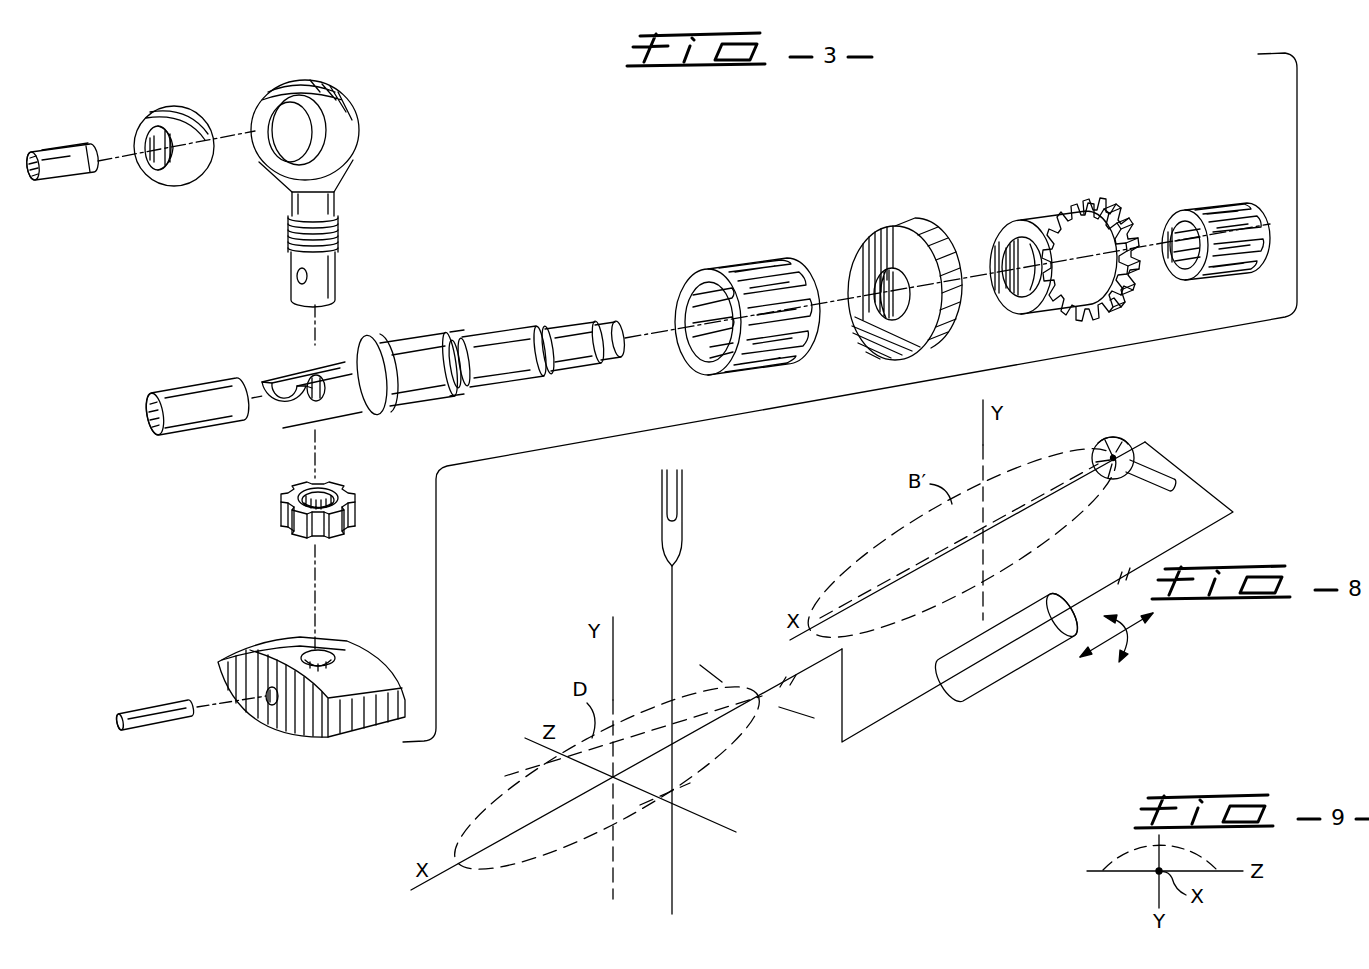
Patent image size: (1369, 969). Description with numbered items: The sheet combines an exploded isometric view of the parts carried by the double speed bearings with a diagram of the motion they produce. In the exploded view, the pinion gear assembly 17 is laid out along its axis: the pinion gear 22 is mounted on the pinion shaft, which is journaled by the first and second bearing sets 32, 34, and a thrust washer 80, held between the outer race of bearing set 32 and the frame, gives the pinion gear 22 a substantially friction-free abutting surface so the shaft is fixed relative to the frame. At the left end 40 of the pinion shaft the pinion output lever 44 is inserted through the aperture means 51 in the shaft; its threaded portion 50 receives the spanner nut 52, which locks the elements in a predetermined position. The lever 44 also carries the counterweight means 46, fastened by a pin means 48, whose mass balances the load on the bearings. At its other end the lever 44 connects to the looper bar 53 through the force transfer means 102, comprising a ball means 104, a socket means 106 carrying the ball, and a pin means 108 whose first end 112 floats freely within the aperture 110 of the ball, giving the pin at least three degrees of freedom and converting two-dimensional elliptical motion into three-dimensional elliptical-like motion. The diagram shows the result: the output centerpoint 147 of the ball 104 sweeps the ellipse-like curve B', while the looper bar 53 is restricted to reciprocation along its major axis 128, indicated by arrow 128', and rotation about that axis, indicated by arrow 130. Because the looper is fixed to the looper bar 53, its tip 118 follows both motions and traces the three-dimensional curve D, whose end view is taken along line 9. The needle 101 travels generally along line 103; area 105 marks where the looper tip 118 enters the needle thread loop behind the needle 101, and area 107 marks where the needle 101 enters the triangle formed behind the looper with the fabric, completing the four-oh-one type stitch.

In FIG. 3, the pinion gear assembly 17 is at (1110, 192).
In FIG. 3, the pinion gear 22 is at (1076, 208).
In FIG. 3, the first bearing set 32 is at (702, 284).
In FIG. 3, the second bearing set 34 is at (1214, 208).
In FIG. 3, the left end of the pinion shaft 40 is at (384, 373).
In FIG. 3, the pinion output lever 44 is at (328, 173).
In FIG. 3, the counterweight means 46 is at (362, 668).
In FIG. 3, the pin means 48 is at (150, 714).
In FIG. 3, the threaded portion 50 is at (338, 232).
In FIG. 3, the aperture means 51 is at (312, 380).
In FIG. 3, the spanner nut 52 is at (337, 492).
In FIG. 8, the looper bar 53 is at (1218, 524).
In FIG. 3, the thrust washer 80 is at (918, 256).
In FIG. 3, the force transfer means 102 is at (231, 164).
In FIG. 3, the ball means 104 is at (196, 122).
In FIG. 8, the ball means 104 is at (1129, 447).
In FIG. 3, the socket means 106 is at (298, 82).
In FIG. 3, the pin means 108 is at (62, 146).
In FIG. 8, the pin means 108 is at (1160, 478).
In FIG. 3, the aperture 110 is at (152, 138).
In FIG. 3, the first end of the pin 112 is at (98, 168).
In FIG. 8, the needle 101 is at (683, 486).
In FIG. 8, the line 103 is at (674, 584).
In FIG. 8, the area 105 is at (666, 727).
In FIG. 8, the area 107 is at (660, 798).
In FIG. 8, the line 9— 9 is at (788, 732).
In FIG. 8, the tip of the looper 118 is at (799, 669).
In FIG. 8, the major axis of the looper bar 128 is at (1129, 556).
In FIG. 8, the arrow 128' is at (1146, 641).
In FIG. 8, the arrow 130 is at (1128, 665).
In FIG. 8, the output centerpoint 147 is at (1112, 457).